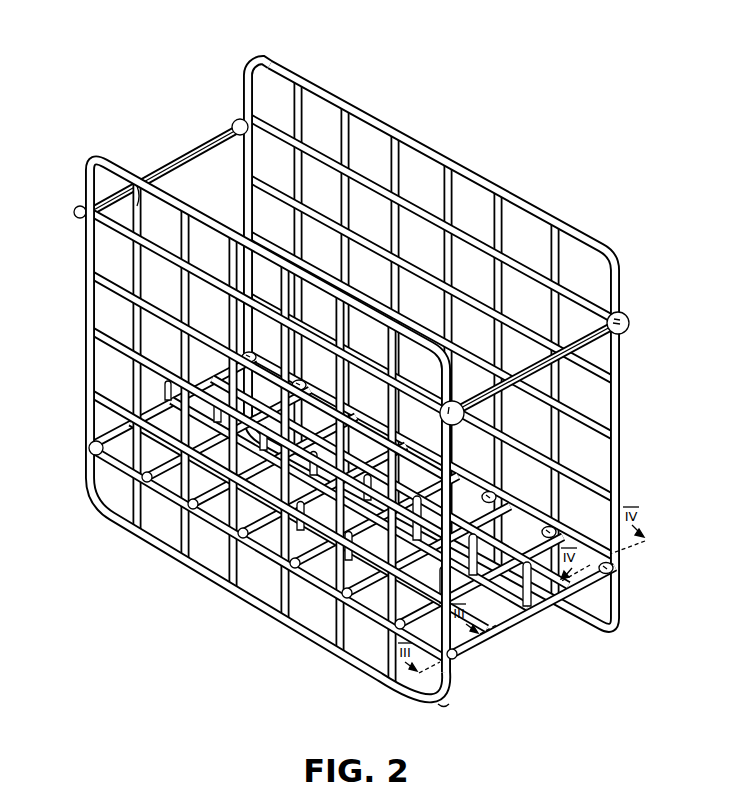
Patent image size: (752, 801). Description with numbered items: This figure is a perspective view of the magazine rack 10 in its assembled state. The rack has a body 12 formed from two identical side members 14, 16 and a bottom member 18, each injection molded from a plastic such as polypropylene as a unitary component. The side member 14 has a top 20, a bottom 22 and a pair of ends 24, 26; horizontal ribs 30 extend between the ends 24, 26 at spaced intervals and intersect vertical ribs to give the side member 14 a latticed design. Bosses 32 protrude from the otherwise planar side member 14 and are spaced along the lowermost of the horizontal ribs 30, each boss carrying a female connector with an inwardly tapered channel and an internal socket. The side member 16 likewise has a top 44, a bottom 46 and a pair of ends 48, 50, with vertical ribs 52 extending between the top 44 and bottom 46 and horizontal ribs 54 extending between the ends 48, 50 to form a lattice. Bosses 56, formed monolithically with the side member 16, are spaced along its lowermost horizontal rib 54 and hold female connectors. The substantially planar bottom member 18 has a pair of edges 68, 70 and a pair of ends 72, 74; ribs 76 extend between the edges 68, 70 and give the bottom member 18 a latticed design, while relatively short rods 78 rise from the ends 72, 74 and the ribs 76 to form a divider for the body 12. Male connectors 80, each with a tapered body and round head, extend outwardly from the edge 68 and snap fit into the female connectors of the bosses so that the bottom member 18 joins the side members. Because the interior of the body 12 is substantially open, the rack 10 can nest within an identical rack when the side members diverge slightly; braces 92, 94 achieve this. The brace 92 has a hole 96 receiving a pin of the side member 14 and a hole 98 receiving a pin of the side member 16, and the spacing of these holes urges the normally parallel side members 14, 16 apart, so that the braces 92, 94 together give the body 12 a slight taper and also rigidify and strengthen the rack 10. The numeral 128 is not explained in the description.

The magazine rack 10 is at (582, 674).
The body 12 is at (420, 340).
The side member 14 is at (449, 707).
The side member 16 is at (257, 60).
The bottom member 18 is at (369, 512).
The top 20 is at (280, 258).
The bottom 22 is at (200, 573).
The end 24 is at (453, 684).
The end 26 is at (85, 303).
The horizontal ribs 30 is at (106, 282).
The bosses 32 is at (93, 452).
The top 44 is at (392, 132).
The bottom 46 is at (584, 633).
The end 48 is at (618, 432).
The end 50 is at (243, 103).
The vertical ribs 52 is at (303, 107).
The horizontal ribs 54 is at (462, 238).
The bosses 56 is at (302, 381).
The edge 68 is at (258, 490).
The edge 70 is at (509, 554).
The end 72 is at (490, 636).
The end 74 is at (112, 440).
The ribs 76 is at (205, 445).
The rods 78 is at (168, 386).
The male connectors 80 is at (534, 526).
The brace 92 is at (580, 348).
The brace 94 is at (176, 162).
The hole 96 is at (464, 418).
The hole 98 is at (626, 332).
The hook 128 is at (142, 198).